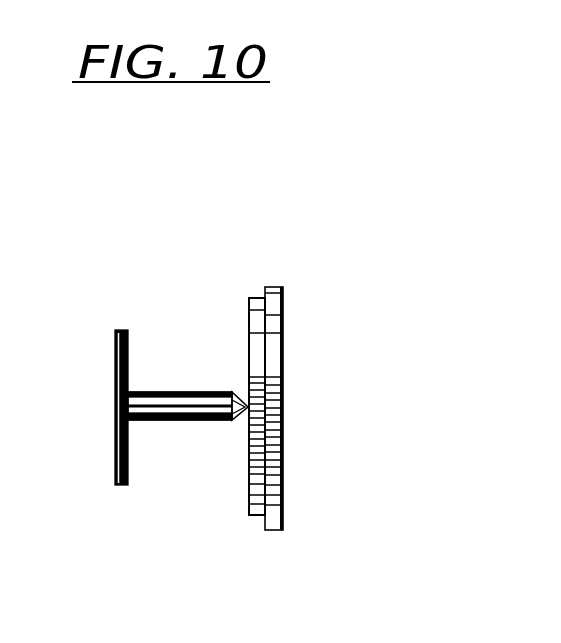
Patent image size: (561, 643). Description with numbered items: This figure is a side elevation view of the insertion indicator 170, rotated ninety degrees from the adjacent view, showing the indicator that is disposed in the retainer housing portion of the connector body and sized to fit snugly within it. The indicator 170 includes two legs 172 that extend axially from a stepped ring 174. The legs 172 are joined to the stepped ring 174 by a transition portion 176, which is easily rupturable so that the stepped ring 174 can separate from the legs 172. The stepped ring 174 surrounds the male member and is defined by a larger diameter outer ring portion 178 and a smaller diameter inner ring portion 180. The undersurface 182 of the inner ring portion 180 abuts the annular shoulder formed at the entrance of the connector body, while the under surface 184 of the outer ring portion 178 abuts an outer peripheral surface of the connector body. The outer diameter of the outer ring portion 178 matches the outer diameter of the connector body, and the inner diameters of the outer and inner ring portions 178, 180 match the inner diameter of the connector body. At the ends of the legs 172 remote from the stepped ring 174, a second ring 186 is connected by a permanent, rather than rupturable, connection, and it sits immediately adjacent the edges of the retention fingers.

The insertion indicator 170 is at (287, 190).
The legs 172 is at (158, 403).
The stepped ring 174 is at (268, 540).
The transition portion 176 is at (248, 407).
The outer ring portion 178 is at (270, 316).
The inner ring portion 180 is at (253, 315).
The undersurface 182 is at (255, 475).
The under surface 184 is at (267, 286).
The second ring 186 is at (117, 461).